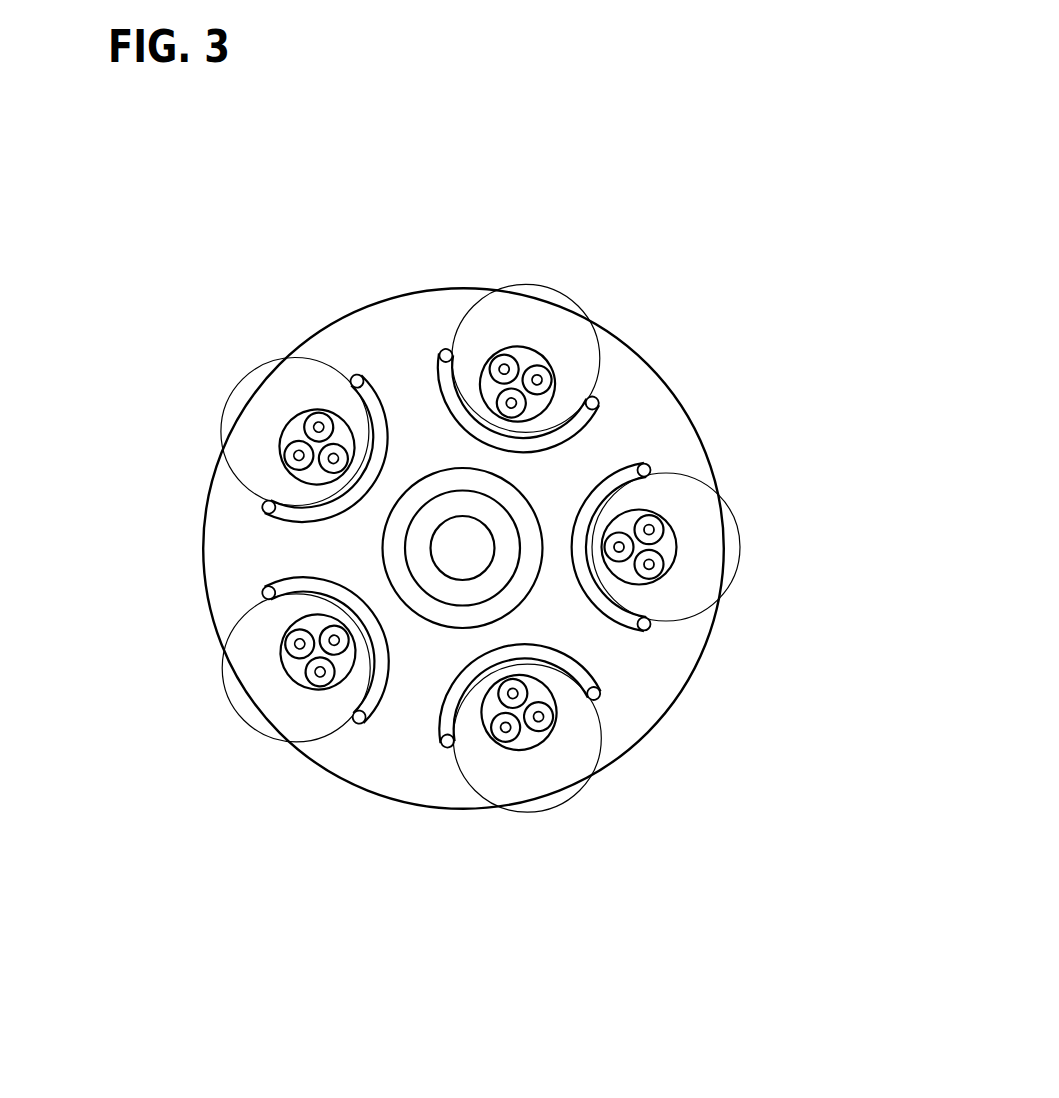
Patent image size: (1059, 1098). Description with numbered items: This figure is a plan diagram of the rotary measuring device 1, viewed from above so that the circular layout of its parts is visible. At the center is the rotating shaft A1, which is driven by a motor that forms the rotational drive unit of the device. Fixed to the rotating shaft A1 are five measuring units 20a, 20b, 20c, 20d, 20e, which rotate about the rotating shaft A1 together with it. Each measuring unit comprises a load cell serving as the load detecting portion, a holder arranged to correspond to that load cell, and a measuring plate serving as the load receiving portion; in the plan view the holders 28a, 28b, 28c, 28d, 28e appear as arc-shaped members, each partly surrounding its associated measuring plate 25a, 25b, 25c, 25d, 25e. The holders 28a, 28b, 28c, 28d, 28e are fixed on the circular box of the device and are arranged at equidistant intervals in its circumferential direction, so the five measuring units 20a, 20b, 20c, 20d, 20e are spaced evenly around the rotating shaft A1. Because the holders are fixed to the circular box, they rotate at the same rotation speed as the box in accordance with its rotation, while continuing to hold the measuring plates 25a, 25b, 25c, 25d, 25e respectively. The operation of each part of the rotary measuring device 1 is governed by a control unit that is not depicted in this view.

The rotary measuring device 1 is at (633, 130).
The measuring unit 20a is at (197, 322).
The measuring unit 20b is at (156, 669).
The measuring unit 20c is at (515, 878).
The measuring unit 20d is at (758, 573).
The measuring unit 20e is at (715, 262).
The measuring plate 25a is at (226, 413).
The measuring plate 25b is at (247, 712).
The measuring plate 25c is at (570, 793).
The measuring plate 25d is at (732, 510).
The measuring plate 25e is at (577, 298).
The holder 28a is at (362, 373).
The holder 28b is at (262, 588).
The holder 28c is at (443, 746).
The holder 28d is at (646, 628).
The holder 28e is at (597, 396).
The rotating shaft A1 is at (469, 557).